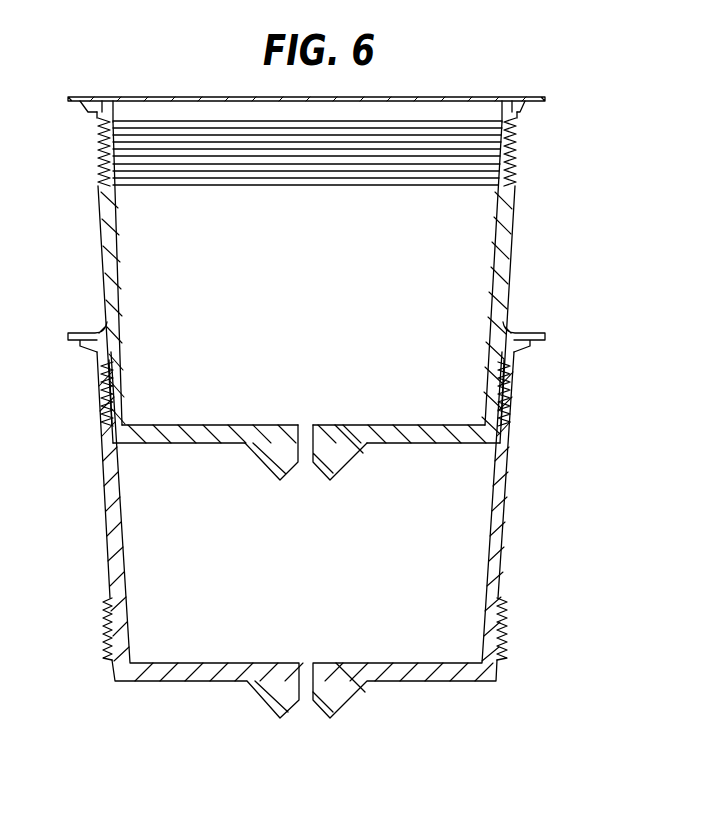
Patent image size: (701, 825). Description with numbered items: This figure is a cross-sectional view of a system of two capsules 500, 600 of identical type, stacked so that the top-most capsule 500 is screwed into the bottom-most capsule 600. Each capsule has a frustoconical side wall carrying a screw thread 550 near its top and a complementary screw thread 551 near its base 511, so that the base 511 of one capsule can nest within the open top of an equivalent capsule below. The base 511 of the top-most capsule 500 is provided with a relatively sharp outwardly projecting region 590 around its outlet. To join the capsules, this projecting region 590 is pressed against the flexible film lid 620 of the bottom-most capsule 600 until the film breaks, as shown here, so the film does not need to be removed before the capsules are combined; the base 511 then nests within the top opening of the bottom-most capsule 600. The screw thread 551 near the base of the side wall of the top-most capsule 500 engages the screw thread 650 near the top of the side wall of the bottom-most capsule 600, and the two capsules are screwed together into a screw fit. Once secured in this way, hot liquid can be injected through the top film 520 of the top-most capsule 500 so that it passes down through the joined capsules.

The capsule 500 is at (375, 311).
The base 511 is at (176, 438).
The top film 520 is at (545, 100).
The screw thread 550 is at (505, 157).
The screw thread 551 is at (497, 399).
The projecting region 590 is at (337, 460).
The capsule 600 is at (368, 505).
The flexible film lid 620 is at (545, 337).
The screw thread 650 is at (507, 396).